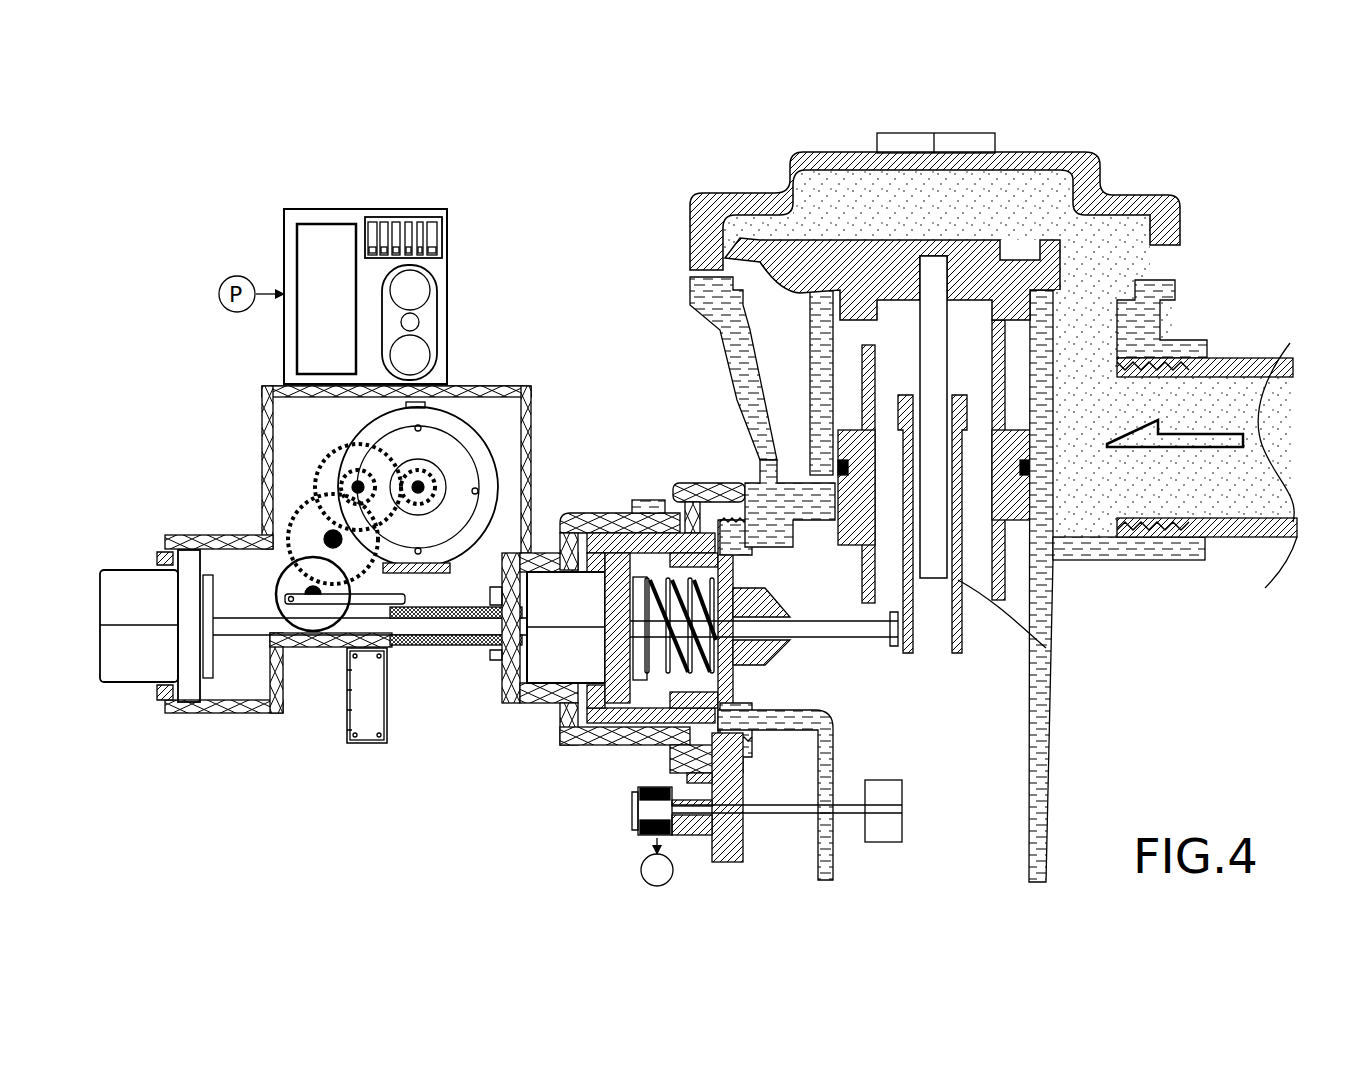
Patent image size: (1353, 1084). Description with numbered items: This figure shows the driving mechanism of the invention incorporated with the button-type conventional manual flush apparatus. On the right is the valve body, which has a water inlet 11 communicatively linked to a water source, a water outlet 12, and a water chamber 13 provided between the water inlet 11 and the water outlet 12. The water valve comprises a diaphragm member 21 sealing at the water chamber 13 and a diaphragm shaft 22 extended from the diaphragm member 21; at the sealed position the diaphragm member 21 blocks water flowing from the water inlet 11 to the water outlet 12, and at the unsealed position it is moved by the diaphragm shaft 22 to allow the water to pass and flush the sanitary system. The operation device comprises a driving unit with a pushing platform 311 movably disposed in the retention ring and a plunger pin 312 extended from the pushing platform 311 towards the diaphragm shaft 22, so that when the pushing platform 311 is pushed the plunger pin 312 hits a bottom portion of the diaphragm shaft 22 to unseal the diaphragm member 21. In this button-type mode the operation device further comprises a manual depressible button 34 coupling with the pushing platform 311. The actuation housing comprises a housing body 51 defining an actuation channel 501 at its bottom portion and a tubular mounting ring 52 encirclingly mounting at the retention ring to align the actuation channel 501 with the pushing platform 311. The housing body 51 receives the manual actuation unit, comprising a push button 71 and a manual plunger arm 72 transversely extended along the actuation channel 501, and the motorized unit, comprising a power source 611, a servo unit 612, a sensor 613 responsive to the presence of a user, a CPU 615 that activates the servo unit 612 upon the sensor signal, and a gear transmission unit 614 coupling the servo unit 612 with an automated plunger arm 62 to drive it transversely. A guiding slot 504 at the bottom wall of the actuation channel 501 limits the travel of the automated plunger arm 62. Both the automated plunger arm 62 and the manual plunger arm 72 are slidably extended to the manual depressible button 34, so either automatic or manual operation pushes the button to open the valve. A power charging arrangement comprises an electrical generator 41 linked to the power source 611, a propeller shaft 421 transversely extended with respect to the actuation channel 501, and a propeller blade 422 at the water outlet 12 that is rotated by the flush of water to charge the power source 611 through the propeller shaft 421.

The water inlet 11 is at (1205, 388).
The water outlet 12 is at (990, 747).
The water chamber 13 is at (1055, 210).
The diaphragm member 21 is at (1022, 262).
The diaphragm shaft 22 is at (960, 574).
The pushing platform 311 is at (643, 580).
The plunger pin 312 is at (878, 640).
The manual depressible button 34 is at (590, 658).
The electrical generator 41 is at (634, 812).
The propeller shaft 421 is at (780, 813).
The propeller blade 422 is at (885, 830).
The housing body 51 is at (262, 407).
The tubular mounting ring 52 is at (584, 521).
The actuation channel 501 is at (240, 568).
The guiding slot 504 is at (420, 660).
The power source 611 is at (316, 235).
The servo unit 612 is at (460, 432).
The sensor 613 is at (421, 290).
The gear transmission unit 614 is at (274, 613).
The CPU 615 is at (400, 225).
The automated plunger arm 62 is at (466, 625).
The push button 71 is at (158, 598).
The manual plunger arm 72 is at (456, 650).